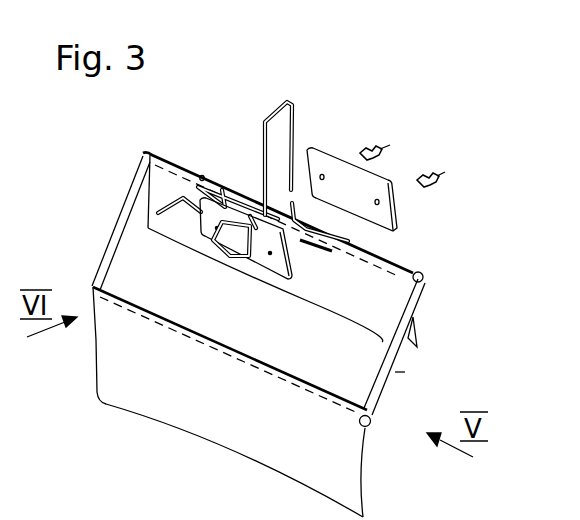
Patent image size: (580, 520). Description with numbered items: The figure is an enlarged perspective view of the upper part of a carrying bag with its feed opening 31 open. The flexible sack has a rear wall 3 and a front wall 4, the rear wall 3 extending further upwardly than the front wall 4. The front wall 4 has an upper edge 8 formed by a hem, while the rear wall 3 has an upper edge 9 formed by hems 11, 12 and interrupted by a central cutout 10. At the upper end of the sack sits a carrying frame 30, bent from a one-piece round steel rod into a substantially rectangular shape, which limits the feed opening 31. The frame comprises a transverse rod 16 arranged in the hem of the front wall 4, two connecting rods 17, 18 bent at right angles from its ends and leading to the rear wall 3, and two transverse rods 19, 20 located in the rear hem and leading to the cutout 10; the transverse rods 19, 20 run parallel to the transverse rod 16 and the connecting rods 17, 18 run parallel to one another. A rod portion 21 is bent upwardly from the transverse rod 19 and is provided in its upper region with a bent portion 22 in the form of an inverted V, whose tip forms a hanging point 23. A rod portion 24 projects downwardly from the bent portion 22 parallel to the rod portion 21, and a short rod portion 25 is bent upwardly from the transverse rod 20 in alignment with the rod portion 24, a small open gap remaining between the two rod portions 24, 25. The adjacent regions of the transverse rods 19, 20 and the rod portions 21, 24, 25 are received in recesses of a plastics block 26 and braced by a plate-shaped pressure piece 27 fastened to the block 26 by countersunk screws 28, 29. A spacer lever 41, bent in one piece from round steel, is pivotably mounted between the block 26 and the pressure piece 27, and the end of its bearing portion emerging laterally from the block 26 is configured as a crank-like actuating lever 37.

The rear wall 3 is at (353, 300).
The front wall 4 is at (147, 393).
The upper edge 8 is at (152, 296).
The upper edge 9 is at (177, 150).
The cutout 10 is at (323, 250).
The hem 11 is at (163, 152).
The hem 12 is at (410, 266).
The transverse rod 16 is at (373, 427).
The connecting rod 17 is at (122, 263).
The connecting rod 18 is at (383, 387).
The transverse rod 19 is at (202, 175).
The transverse rod 20 is at (367, 250).
The rod portion 21 is at (278, 193).
The bent portion 22 is at (263, 116).
The hanging point 23 is at (288, 100).
The rod portion 24 is at (292, 163).
The rod portion 25 is at (298, 198).
The block 26 is at (273, 267).
The pressure piece 27 is at (395, 208).
The screw 28 is at (378, 147).
The screw 29 is at (434, 175).
The carrying frame 30 is at (405, 371).
The feed opening 31 is at (110, 243).
The actuating lever 37 is at (163, 202).
The spacer lever 41 is at (230, 255).